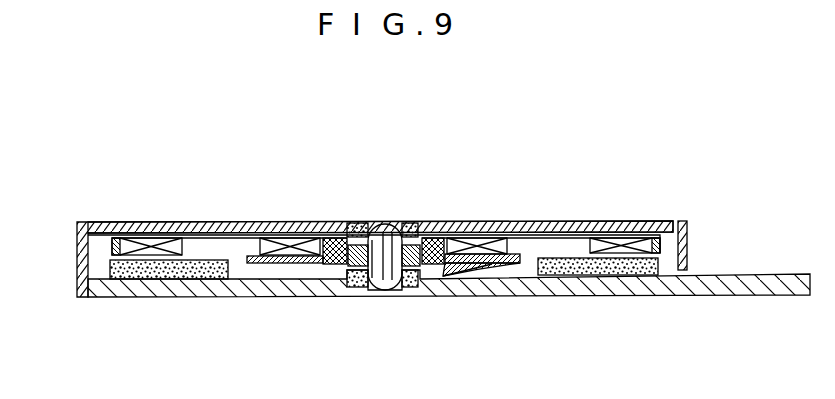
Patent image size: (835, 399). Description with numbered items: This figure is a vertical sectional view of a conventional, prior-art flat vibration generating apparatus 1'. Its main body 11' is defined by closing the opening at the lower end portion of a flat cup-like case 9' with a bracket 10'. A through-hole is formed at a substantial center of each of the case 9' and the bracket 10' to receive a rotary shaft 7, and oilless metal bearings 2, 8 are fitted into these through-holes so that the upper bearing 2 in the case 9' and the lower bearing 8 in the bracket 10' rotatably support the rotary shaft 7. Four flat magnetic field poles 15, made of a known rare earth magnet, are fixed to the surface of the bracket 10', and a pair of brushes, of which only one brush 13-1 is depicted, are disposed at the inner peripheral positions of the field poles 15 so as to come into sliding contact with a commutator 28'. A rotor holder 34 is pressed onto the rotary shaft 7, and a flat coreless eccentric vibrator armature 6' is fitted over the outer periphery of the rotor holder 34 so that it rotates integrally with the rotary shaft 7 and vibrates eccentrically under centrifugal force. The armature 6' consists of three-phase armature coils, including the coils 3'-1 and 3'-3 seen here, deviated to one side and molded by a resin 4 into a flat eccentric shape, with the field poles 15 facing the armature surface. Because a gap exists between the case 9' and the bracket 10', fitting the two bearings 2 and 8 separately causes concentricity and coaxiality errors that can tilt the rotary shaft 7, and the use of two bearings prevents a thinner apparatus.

The flat vibration generating apparatus 1' is at (414, 257).
The main body 11' is at (375, 220).
The case 9' is at (380, 188).
The flat coreless eccentric vibrator armature 6' is at (693, 206).
The commutator 28' is at (374, 198).
The armature coil 3'-1 is at (216, 303).
The armature coil 3'-3 is at (558, 303).
The resin 4 is at (327, 234).
The brush 13-1 is at (487, 268).
The oilless metal bearing 2 is at (358, 232).
The rotor holder 34 is at (420, 233).
The oilless metal bearing 8 is at (363, 278).
The rotary shaft 7 is at (390, 235).
The flat magnetic field pole 15 is at (570, 267).
The bracket 10' is at (449, 320).